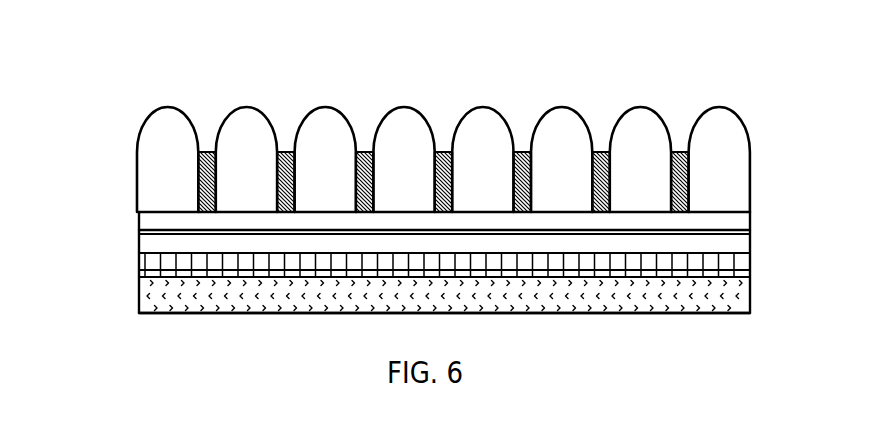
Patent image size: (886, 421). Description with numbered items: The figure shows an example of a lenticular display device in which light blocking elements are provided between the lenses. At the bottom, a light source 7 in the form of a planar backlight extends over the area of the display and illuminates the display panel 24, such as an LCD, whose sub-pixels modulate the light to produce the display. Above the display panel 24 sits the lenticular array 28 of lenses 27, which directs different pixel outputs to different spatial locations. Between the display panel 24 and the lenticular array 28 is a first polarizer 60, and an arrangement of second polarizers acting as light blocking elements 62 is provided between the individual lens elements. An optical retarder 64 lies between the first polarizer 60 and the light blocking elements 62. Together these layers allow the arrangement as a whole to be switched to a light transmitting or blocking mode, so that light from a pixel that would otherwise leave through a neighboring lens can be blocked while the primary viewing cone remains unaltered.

The light source 7 is at (138, 298).
The display panel 24 is at (138, 264).
The lens 27 is at (642, 130).
The lenticular array 28 is at (763, 170).
The first polarizer 60 is at (138, 236).
The light blocking element 62 is at (275, 152).
The optical retarder 64 is at (138, 221).